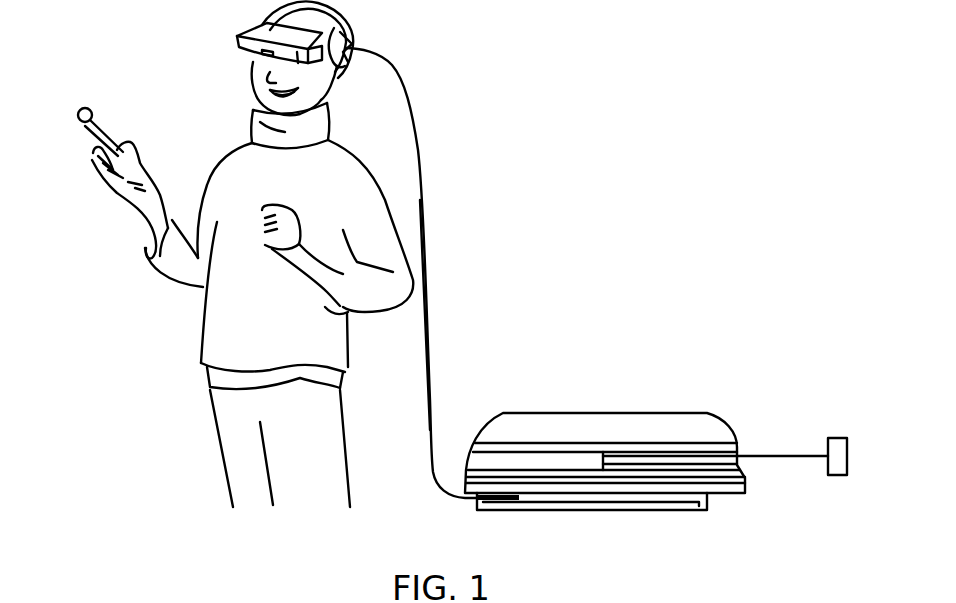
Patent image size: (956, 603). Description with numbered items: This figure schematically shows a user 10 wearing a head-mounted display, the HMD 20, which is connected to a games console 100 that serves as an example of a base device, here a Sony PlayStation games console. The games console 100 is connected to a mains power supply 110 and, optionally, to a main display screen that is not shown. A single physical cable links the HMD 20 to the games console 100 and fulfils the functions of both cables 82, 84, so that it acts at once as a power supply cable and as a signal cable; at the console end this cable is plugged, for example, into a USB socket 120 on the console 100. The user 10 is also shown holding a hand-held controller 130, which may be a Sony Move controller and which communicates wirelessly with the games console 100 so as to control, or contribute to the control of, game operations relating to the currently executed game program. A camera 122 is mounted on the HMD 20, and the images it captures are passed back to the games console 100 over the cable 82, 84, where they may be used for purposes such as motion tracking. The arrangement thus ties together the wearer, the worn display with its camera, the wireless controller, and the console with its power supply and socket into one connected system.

The user 10 is at (204, 151).
The HMD 20 is at (350, 32).
The camera 122 is at (240, 49).
The hand-held controller 130 is at (82, 107).
The cable 82 is at (433, 310).
The cable 84 is at (425, 315).
The games console 100 is at (615, 412).
The mains power supply 110 is at (838, 438).
The USB socket 120 is at (498, 503).